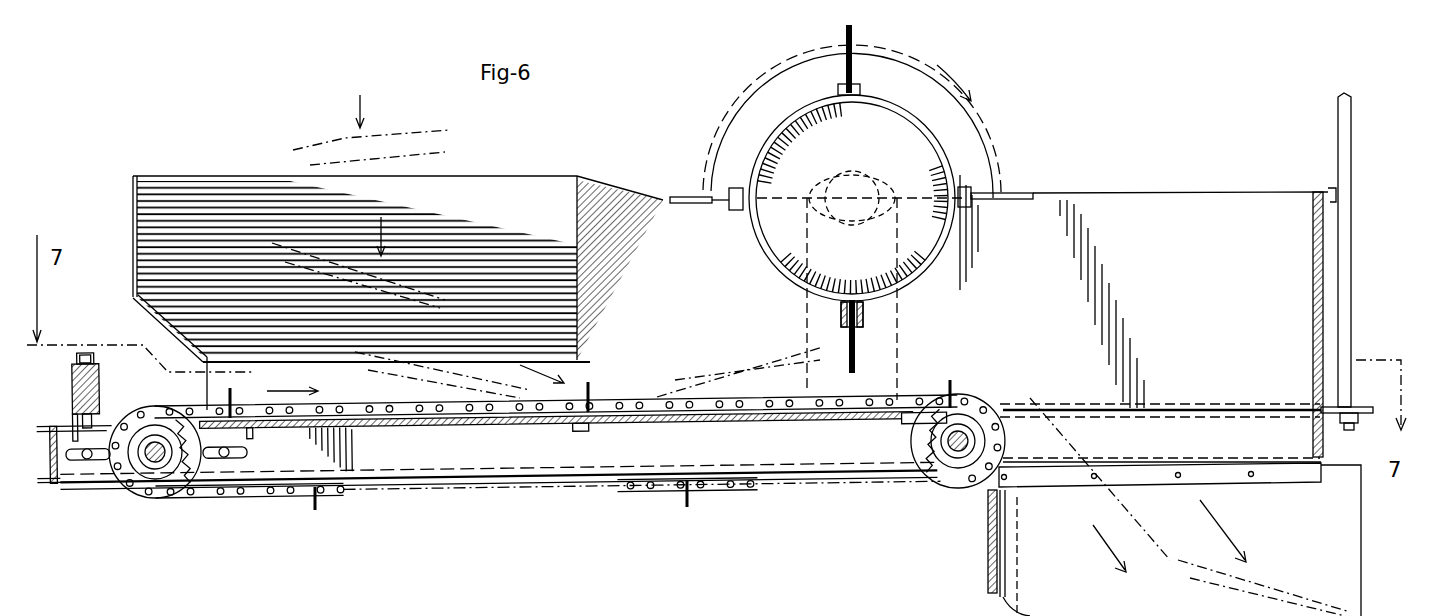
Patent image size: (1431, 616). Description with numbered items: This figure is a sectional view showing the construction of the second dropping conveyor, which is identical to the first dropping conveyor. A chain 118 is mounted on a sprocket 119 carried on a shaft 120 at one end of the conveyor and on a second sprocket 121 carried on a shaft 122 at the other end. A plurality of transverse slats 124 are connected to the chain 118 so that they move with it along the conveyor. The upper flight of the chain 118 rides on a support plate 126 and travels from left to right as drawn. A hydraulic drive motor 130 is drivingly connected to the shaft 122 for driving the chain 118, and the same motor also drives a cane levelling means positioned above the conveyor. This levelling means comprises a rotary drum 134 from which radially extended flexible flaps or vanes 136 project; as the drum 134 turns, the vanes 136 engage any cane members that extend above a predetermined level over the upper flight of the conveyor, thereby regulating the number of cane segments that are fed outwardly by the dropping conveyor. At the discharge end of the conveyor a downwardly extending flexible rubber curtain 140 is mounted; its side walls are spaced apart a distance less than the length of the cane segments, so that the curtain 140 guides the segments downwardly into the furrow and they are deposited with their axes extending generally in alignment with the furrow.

The chain 118 is at (410, 409).
The sprocket 119 is at (190, 462).
The shaft 120 is at (157, 464).
The sprocket 121 is at (912, 459).
The shaft 122 is at (960, 461).
The transverse slats 124 is at (592, 386).
The support plate 126 is at (442, 431).
The hydraulic drive motor 130 is at (963, 615).
The rotary drum 134 is at (925, 155).
The flexible flaps or vanes 136 is at (856, 43).
The flexible rubber curtain 140 is at (985, 550).